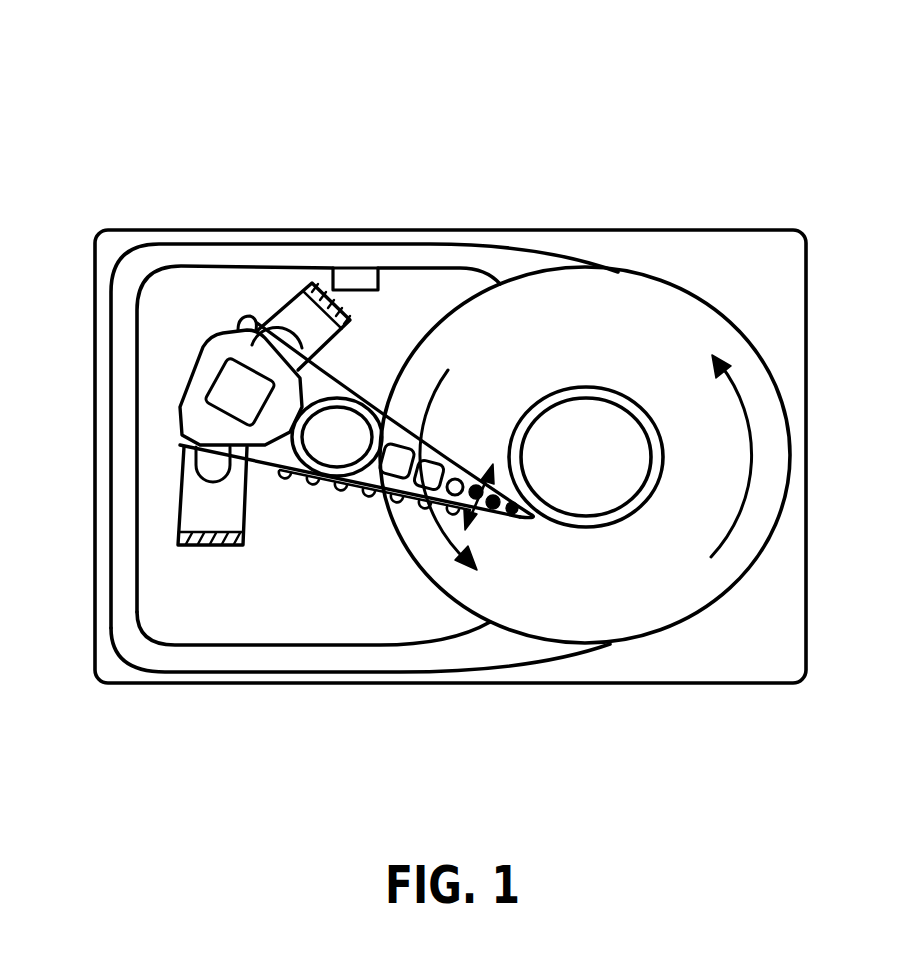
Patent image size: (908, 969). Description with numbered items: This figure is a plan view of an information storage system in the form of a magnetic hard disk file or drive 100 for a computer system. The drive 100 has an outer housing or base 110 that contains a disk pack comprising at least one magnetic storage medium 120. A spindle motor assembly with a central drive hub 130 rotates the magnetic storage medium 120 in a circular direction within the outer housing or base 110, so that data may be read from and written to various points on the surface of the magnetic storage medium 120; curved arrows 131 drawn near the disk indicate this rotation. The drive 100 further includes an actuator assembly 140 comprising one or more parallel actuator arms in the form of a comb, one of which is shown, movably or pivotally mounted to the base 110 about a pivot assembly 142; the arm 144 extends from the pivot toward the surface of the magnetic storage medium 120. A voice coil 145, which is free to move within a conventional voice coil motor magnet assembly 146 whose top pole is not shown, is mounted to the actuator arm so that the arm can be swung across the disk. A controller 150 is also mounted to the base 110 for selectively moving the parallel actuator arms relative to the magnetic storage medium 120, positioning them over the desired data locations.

The hard disk drive 100 is at (757, 138).
The outer housing or base 110 is at (652, 230).
The magnetic storage medium 120 is at (668, 302).
The central drive hub 130 is at (618, 390).
The rotation direction arrows 131 is at (450, 372).
The actuator assembly 140 is at (265, 550).
The pivot assembly 142 is at (303, 488).
The actuator arm 144 is at (390, 428).
The voice coil 145 is at (207, 347).
The voice coil motor magnet assembly 146 is at (293, 310).
The controller 150 is at (370, 290).